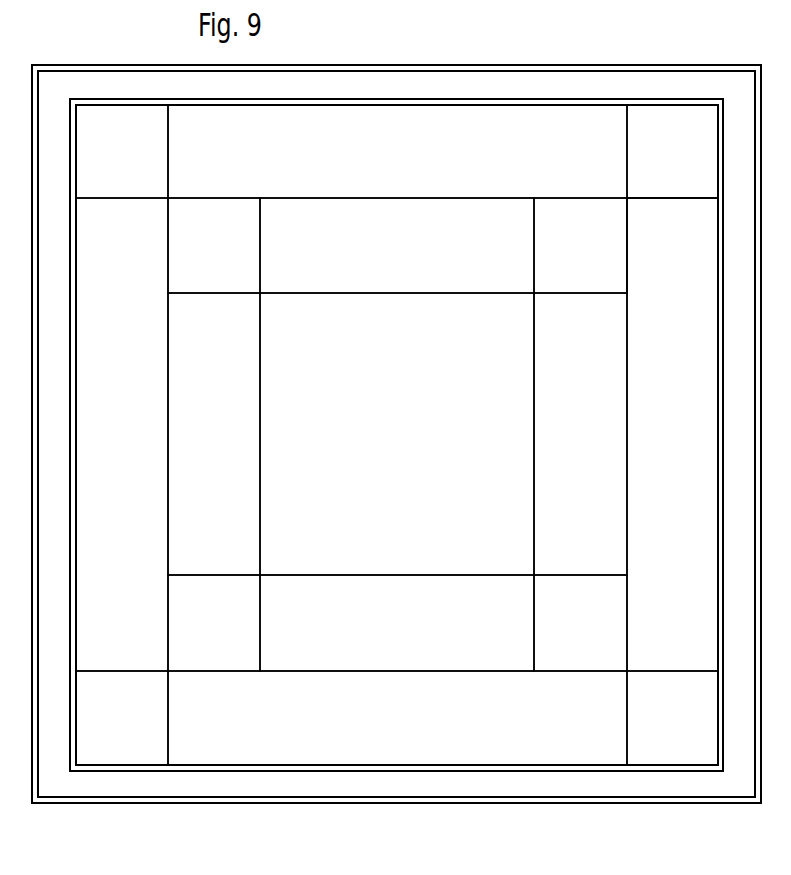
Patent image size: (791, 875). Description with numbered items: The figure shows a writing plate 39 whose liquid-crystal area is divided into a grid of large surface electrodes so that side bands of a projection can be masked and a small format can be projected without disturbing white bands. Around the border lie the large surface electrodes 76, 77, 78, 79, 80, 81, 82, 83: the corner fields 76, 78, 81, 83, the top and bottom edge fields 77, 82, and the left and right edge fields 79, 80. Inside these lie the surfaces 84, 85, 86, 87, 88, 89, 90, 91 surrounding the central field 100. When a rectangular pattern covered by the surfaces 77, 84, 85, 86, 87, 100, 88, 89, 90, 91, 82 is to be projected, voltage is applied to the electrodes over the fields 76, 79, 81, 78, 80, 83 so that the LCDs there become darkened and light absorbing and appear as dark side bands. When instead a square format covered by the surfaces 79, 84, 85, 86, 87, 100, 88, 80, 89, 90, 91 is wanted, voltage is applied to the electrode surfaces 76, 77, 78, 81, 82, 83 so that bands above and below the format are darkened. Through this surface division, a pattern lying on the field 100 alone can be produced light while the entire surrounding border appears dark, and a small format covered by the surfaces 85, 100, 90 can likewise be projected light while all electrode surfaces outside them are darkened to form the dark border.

The substrate plate / frame 39 is at (508, 786).
The large surface electrode 76 is at (111, 159).
The large surface electrode 77 is at (366, 158).
The large surface electrode 78 is at (660, 159).
The large surface electrode 79 is at (104, 446).
The large surface electrode 80 is at (665, 446).
The large surface electrode 81 is at (109, 732).
The large surface electrode 82 is at (378, 731).
The large surface electrode 83 is at (664, 731).
The surface 84 is at (198, 249).
The surface 85 is at (376, 249).
The surface 86 is at (658, 249).
The surface 87 is at (198, 446).
The surface 88 is at (568, 445).
The surface 89 is at (198, 633).
The surface 90 is at (378, 633).
The surface 91 is at (568, 633).
The field 100 is at (377, 445).